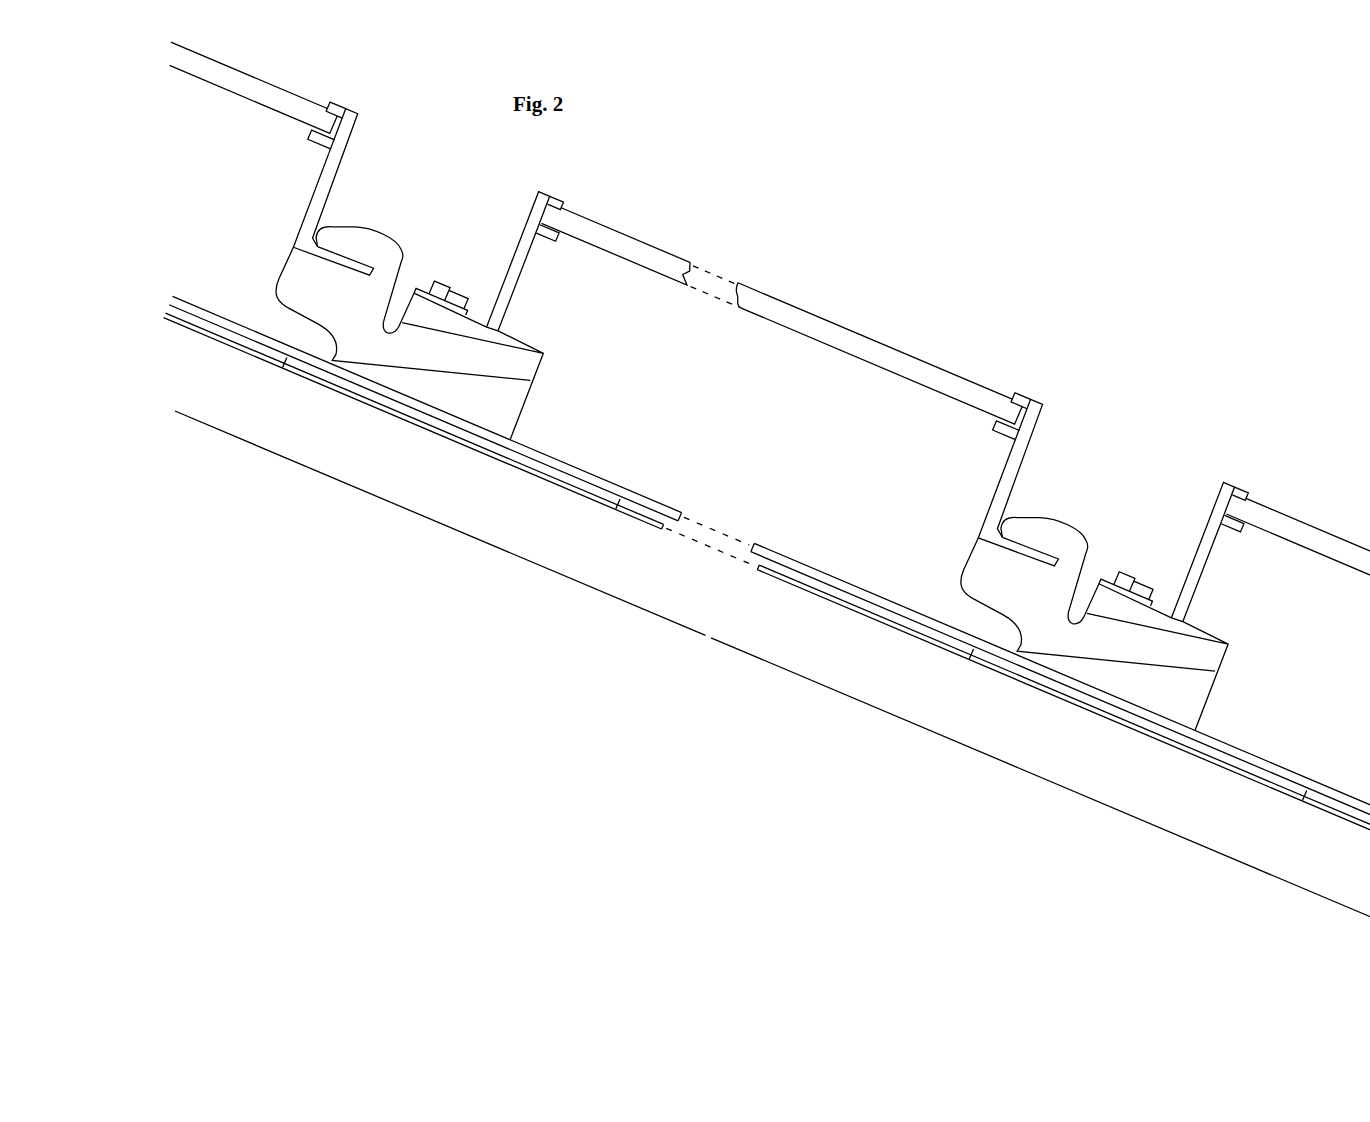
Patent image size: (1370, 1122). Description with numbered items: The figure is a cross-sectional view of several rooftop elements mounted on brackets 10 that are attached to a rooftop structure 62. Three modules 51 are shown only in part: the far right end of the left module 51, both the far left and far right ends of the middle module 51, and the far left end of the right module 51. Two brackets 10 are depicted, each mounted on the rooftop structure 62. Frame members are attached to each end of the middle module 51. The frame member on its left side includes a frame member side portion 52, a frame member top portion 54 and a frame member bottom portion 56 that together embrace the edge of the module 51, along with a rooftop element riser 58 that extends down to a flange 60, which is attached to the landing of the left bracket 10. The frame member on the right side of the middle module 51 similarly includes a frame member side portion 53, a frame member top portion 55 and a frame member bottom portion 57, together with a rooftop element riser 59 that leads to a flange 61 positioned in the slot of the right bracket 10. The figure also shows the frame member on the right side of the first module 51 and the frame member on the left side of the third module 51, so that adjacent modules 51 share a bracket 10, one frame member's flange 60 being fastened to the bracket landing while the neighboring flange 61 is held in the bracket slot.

The bracket 10 is at (1068, 542).
The module 51 is at (1290, 522).
The frame member side portion 52 is at (1216, 497).
The frame member side portion 53 is at (1042, 416).
The frame member top portion 54 is at (1242, 495).
The frame member top portion 55 is at (1030, 397).
The frame member bottom portion 56 is at (1233, 522).
The frame member bottom portion 57 is at (1003, 425).
The rooftop element riser 58 is at (1198, 545).
The rooftop element riser 59 is at (995, 492).
The flange 60 is at (1103, 583).
The flange 61 is at (1002, 527).
The rooftop structure 62 is at (963, 643).